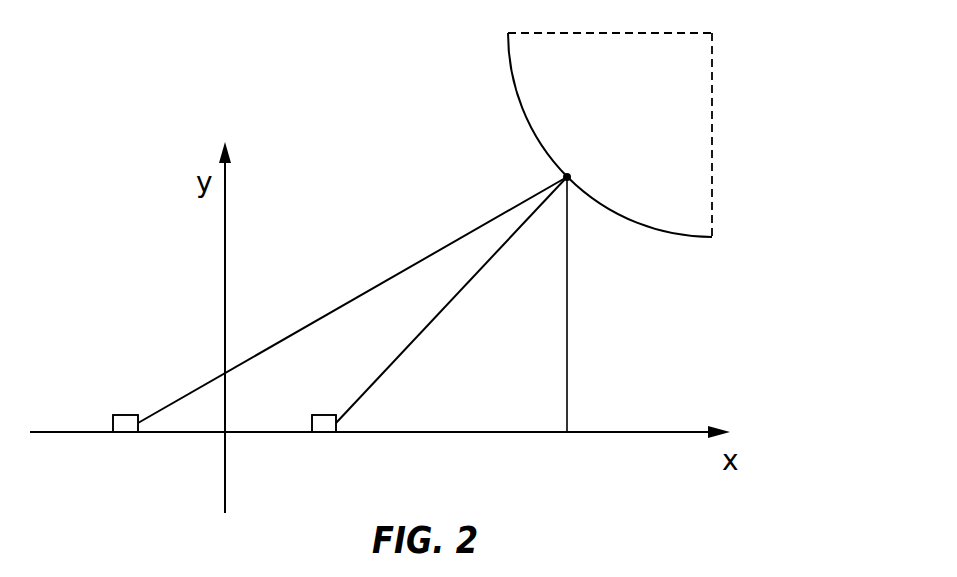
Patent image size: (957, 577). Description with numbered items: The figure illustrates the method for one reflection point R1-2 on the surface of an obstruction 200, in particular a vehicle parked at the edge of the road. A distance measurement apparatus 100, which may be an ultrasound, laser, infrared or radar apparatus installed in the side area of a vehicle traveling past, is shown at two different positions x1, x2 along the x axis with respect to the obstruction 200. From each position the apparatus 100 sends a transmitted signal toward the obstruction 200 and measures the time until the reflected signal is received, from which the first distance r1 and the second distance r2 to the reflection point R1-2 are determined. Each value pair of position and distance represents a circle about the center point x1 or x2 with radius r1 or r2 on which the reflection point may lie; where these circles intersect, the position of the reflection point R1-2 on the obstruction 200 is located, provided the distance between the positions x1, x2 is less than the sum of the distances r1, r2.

The distance measurement apparatus 100 is at (125, 415).
The obstruction 200 is at (713, 142).
The first position x1 is at (127, 448).
The second position x2 is at (324, 449).
The first distance r1 is at (352, 300).
The second distance r2 is at (451, 300).
The reflection point R1-2 is at (593, 305).